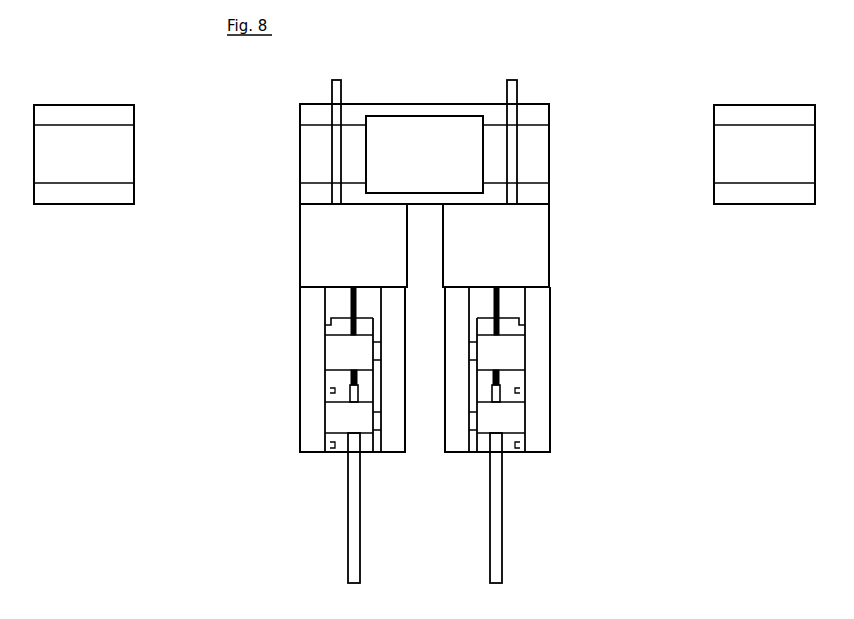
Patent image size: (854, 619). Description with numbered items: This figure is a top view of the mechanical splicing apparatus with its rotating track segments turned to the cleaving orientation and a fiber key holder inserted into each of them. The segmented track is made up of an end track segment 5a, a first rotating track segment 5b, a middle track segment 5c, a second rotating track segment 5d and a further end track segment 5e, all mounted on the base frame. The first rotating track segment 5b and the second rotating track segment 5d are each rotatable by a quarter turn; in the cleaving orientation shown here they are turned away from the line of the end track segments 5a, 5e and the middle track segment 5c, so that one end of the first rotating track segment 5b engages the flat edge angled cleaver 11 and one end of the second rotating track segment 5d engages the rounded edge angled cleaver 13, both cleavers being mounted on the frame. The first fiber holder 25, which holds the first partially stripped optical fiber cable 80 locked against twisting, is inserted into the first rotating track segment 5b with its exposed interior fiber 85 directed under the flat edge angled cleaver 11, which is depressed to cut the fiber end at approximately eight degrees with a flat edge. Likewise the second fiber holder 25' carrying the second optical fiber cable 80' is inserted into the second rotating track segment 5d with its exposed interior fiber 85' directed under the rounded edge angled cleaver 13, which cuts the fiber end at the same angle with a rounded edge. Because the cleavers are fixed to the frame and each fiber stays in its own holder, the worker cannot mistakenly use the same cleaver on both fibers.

The end track segment 5a is at (95, 105).
The first rotating track segment 5b is at (302, 368).
The middle track segment 5c is at (308, 105).
The second rotating track segment 5d is at (547, 344).
The end track segment 5e is at (750, 105).
The flat edge angled cleaver 11 is at (298, 243).
The rounded edge angled cleaver 13 is at (549, 250).
The first fiber holder 25 is at (286, 394).
The second fiber holder 25' is at (558, 377).
The first optical fiber cable 80 is at (302, 508).
The second optical fiber cable 80' is at (555, 508).
The interior fiber 85 is at (281, 310).
The interior fiber 85' is at (567, 311).